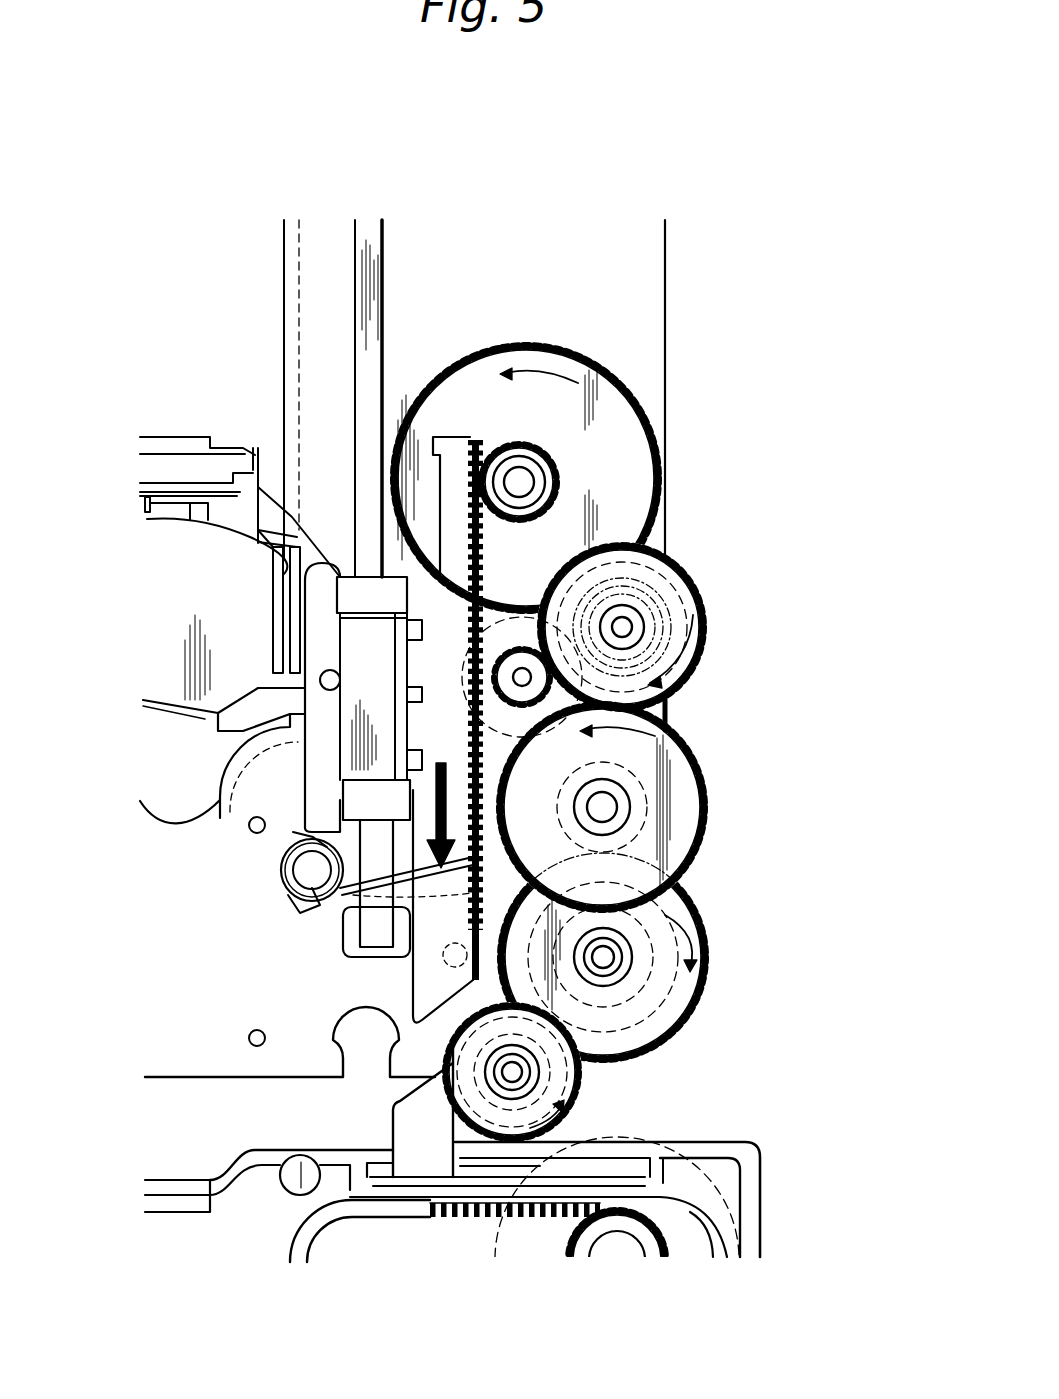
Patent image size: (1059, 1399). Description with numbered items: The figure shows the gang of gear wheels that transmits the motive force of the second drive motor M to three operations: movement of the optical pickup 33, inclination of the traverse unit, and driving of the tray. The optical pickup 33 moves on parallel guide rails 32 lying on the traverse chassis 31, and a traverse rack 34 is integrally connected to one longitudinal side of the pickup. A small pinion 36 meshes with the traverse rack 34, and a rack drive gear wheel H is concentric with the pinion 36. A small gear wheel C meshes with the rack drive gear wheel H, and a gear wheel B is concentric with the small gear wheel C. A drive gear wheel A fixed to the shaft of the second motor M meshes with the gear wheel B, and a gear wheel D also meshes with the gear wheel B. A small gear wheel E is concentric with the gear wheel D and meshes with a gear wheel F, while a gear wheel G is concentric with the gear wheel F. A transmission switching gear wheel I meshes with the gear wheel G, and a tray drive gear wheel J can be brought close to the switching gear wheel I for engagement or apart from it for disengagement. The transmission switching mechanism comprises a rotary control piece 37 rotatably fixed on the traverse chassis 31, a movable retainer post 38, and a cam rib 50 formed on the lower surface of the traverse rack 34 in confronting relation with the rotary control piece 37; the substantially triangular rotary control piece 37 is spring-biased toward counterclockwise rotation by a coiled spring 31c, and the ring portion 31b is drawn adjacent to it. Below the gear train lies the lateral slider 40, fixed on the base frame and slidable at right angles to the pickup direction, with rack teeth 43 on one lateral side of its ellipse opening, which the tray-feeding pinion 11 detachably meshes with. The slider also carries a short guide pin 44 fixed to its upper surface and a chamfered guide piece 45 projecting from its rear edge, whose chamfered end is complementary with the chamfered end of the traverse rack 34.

The guide rails 32 is at (382, 232).
The traverse rack 34 is at (457, 445).
The optical pickup 33 is at (180, 530).
The small pinion 36 is at (545, 480).
The traverse chassis 31 is at (192, 1055).
The ring portion 31b is at (300, 873).
The coiled spring 31c is at (293, 832).
The cam rib 50 is at (353, 908).
The movable retainer post 38 is at (340, 1005).
The chamfered guide piece 45 is at (400, 1100).
The guide pin 44 is at (298, 1196).
The rack teeth 43 is at (466, 1215).
The lateral slider 40 is at (782, 1137).
The tray-feeding pinion 11 is at (740, 1247).
The rotary control piece 37 is at (640, 1065).
The rack drive gear wheel H is at (505, 340).
The gear wheel B is at (688, 565).
The small gear wheel C is at (665, 670).
The second drive motor M is at (660, 707).
The drive gear wheel A is at (522, 700).
The gear wheel D is at (705, 775).
The small gear wheel E is at (690, 852).
The gear wheel F is at (705, 955).
The gear wheel G is at (690, 1013).
The transmission switching gear wheel I is at (590, 1105).
The tray drive gear wheel J is at (760, 1195).